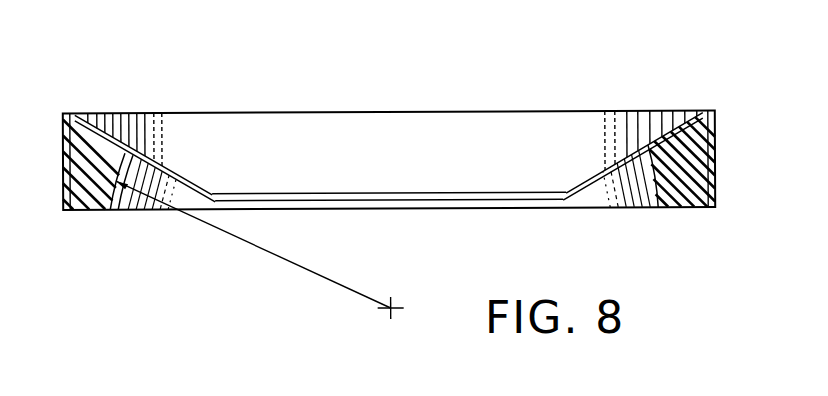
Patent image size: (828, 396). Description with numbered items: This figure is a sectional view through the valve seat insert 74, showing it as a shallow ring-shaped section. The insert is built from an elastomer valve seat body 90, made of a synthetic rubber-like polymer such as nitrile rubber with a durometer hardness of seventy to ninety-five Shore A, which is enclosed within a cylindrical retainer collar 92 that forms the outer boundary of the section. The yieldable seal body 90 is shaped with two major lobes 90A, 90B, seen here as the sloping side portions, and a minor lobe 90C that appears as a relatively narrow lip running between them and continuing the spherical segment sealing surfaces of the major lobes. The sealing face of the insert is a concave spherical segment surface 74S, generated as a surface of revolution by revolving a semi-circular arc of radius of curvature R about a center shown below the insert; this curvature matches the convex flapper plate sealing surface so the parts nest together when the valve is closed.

The valve seat insert 74 is at (660, 92).
The concave spherical segment sealing surface 74S is at (660, 189).
The elastomer valve seat body 90 is at (389, 139).
The major lobe 90A is at (172, 171).
The major lobe 90B is at (602, 173).
The minor lobe 90C is at (385, 193).
The cylindrical retainer collar 92 is at (716, 161).
The radius of curvature R is at (265, 250).